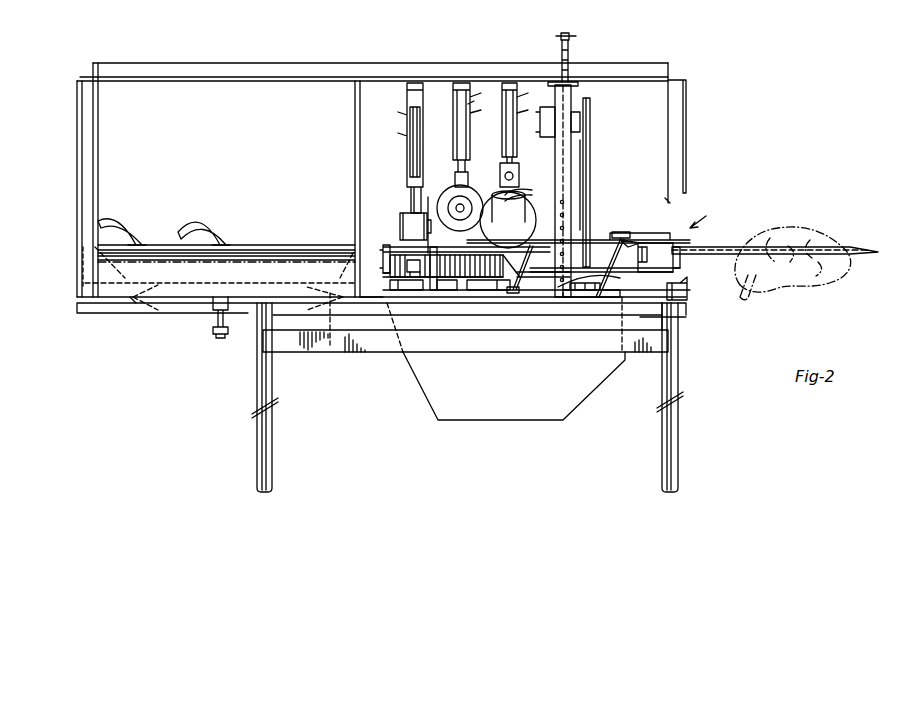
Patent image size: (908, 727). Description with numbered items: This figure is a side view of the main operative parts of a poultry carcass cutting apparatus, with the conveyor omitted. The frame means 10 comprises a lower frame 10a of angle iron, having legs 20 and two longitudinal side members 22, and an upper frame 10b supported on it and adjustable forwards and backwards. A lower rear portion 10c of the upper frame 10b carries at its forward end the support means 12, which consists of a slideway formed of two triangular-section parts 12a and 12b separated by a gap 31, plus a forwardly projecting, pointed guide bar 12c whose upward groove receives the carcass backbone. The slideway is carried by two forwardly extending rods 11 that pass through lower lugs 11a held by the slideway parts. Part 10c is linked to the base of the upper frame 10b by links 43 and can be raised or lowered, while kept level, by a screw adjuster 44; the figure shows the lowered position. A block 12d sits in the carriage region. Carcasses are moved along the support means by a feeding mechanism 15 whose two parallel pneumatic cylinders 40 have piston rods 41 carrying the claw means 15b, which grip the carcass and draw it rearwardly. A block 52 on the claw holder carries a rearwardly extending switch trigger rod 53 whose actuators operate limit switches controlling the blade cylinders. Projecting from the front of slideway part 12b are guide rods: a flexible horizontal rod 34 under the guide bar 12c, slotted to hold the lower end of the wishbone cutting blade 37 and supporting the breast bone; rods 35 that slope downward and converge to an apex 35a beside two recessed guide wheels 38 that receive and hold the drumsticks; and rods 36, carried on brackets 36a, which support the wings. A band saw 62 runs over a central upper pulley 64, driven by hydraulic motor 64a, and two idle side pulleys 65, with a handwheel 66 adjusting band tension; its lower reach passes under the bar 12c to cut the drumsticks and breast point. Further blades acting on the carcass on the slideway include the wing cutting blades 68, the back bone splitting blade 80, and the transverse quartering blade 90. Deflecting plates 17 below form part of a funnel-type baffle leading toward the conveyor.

The frame means 10 is at (309, 62).
The lower frame 10a is at (623, 352).
The upper frame 10b is at (687, 150).
The lower rear portion 10c is at (187, 298).
The forwardly extending rods 11 is at (418, 280).
The lower lugs 11a is at (393, 300).
The support means 12 is at (441, 232).
The slideway part 12a is at (405, 281).
The slideway part 12b is at (460, 282).
The guide bar 12c is at (862, 250).
The clamp block 12d is at (410, 264).
The feeding mechanism 15 is at (706, 213).
The claw means 15b is at (682, 249).
The deflecting plates 17 is at (547, 420).
The legs 20 is at (272, 447).
The longitudinal side members 22 is at (650, 310).
The gap 31 is at (428, 280).
The guide rod 34 is at (683, 283).
The guide rods 35 is at (533, 280).
The apex 35a is at (619, 292).
The guide rods 36 is at (658, 245).
The brackets 36a is at (500, 282).
The wishbone cutting blade 37 is at (673, 269).
The guide wheels 38 is at (607, 292).
The pneumatic cylinders 40 is at (290, 246).
The piston rods 41 is at (518, 282).
The links 43 is at (146, 305).
The screw adjuster 44 is at (220, 340).
The block 52 is at (616, 231).
The switch trigger rod 53 is at (602, 232).
The band saw 62 is at (600, 160).
The central upper pulley 64 is at (587, 98).
The hydraulic motor 64a is at (557, 106).
The side pulleys 65 is at (588, 222).
The handwheel 66 is at (556, 36).
The wing cutting blades 68 is at (520, 198).
The back bone splitting blade 80 is at (466, 190).
The transverse quartering blade 90 is at (407, 200).